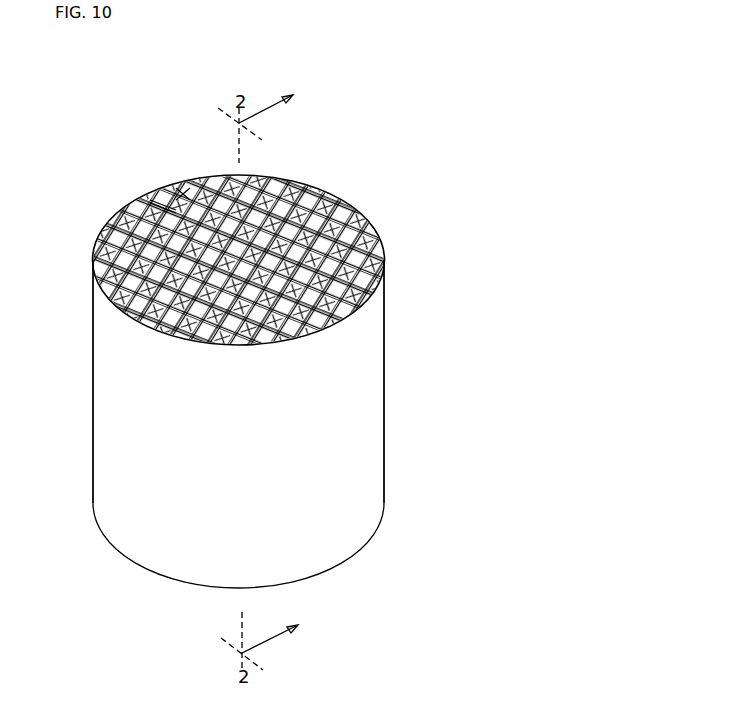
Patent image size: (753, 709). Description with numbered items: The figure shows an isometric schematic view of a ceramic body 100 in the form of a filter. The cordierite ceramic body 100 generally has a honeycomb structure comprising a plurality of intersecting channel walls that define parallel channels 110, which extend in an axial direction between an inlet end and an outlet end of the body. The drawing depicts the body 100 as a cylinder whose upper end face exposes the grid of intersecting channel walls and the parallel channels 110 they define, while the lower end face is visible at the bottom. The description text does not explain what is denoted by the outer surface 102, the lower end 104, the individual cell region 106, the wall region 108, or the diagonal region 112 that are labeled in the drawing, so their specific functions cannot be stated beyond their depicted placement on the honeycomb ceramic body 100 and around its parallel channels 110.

The ceramic body 100 is at (389, 163).
The outer peripheral wall 102 is at (366, 213).
The second end face 104 is at (312, 575).
The cells 106 is at (303, 202).
The partition walls 108 is at (163, 205).
The parallel channels 110 is at (140, 202).
The reinforcing members 112 is at (183, 193).